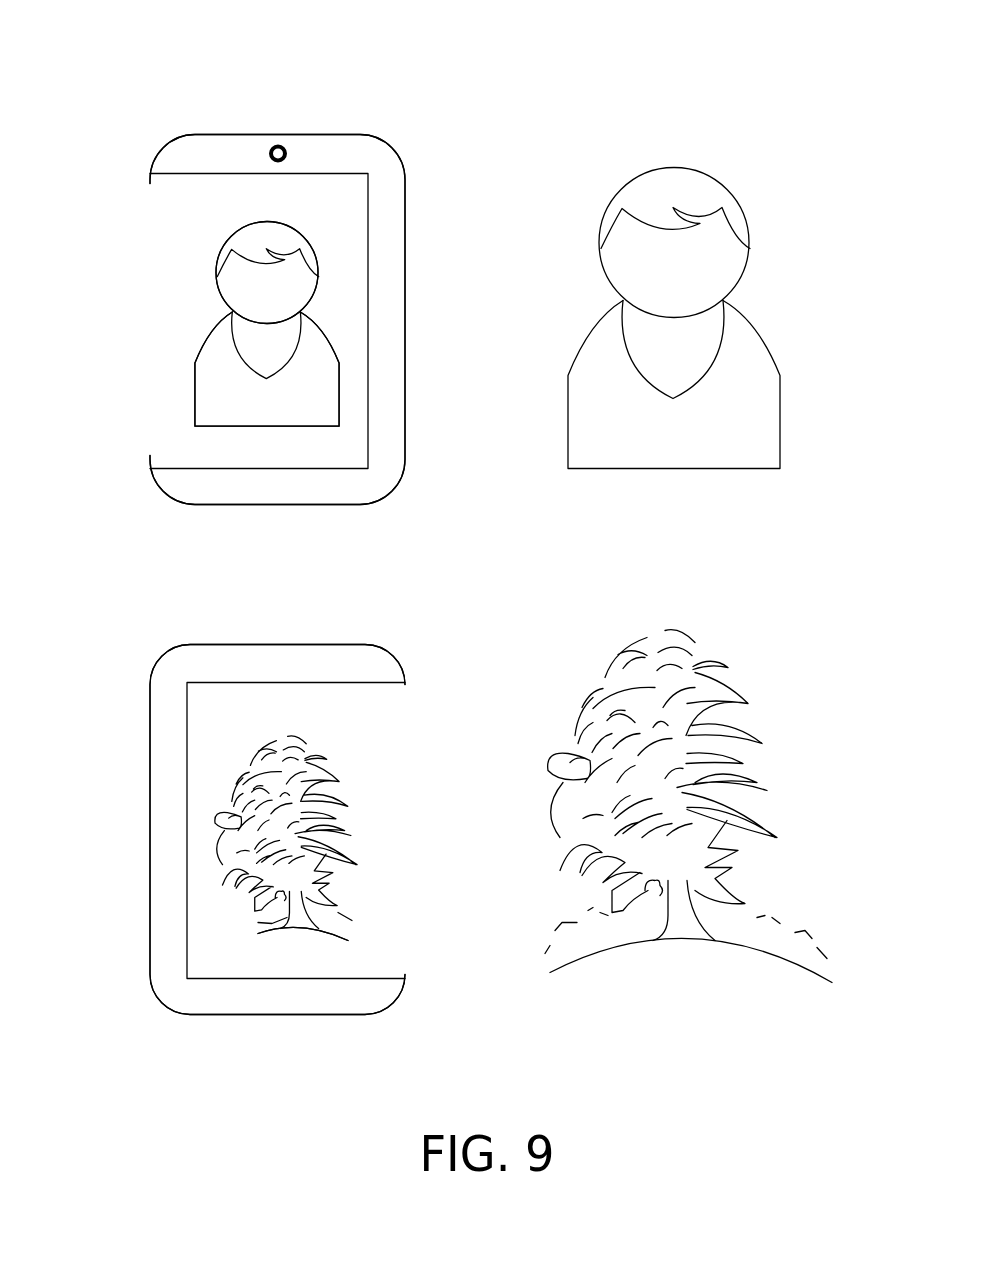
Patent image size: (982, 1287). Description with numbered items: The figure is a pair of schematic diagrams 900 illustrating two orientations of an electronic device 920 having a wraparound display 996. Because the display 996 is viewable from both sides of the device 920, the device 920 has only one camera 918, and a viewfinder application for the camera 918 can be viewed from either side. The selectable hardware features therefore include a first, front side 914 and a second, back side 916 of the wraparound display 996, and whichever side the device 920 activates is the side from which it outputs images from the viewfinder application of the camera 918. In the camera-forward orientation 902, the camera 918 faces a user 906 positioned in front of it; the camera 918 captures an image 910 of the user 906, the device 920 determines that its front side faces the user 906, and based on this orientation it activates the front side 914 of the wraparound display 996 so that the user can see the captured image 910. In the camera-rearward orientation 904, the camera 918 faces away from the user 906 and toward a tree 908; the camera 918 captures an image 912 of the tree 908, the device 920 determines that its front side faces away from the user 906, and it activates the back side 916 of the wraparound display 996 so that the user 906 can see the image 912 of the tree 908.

The pair of schematic diagrams 900 is at (778, 53).
The camera-forward orientation 902 is at (269, 301).
The camera-rearward orientation 904 is at (239, 811).
The user 906 is at (674, 165).
The tree 908 is at (663, 630).
The image of the user 910 is at (339, 390).
The image of the tree 912 is at (236, 805).
The front side of the wraparound display 914 is at (157, 207).
The back side of the wraparound display 916 is at (222, 722).
The camera 918 is at (276, 143).
The electronic device 920 is at (358, 133).
The wraparound display 996 is at (160, 388).